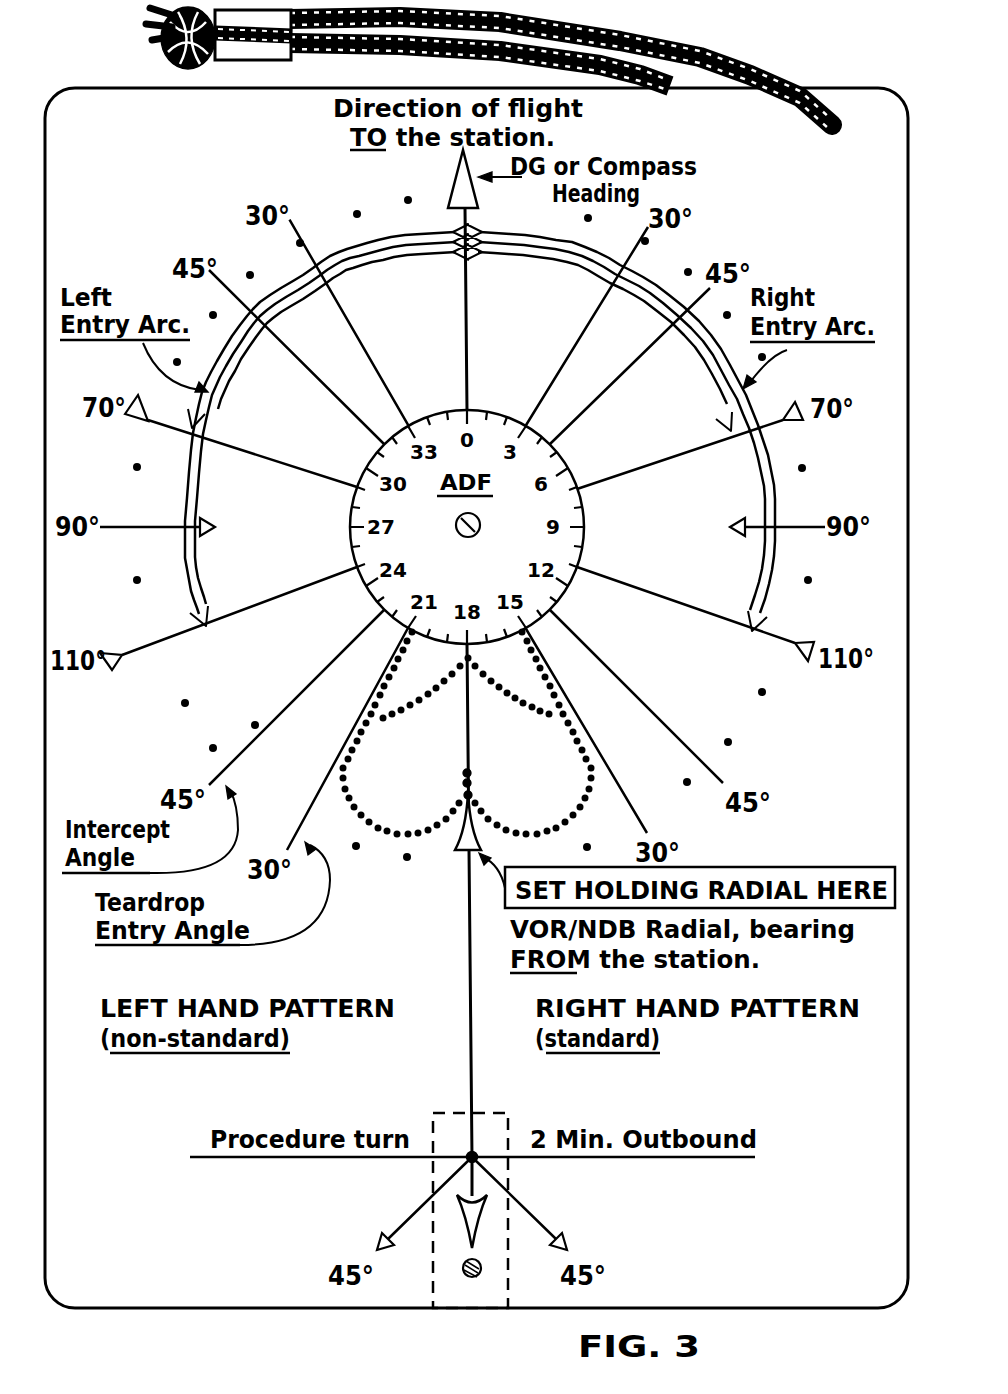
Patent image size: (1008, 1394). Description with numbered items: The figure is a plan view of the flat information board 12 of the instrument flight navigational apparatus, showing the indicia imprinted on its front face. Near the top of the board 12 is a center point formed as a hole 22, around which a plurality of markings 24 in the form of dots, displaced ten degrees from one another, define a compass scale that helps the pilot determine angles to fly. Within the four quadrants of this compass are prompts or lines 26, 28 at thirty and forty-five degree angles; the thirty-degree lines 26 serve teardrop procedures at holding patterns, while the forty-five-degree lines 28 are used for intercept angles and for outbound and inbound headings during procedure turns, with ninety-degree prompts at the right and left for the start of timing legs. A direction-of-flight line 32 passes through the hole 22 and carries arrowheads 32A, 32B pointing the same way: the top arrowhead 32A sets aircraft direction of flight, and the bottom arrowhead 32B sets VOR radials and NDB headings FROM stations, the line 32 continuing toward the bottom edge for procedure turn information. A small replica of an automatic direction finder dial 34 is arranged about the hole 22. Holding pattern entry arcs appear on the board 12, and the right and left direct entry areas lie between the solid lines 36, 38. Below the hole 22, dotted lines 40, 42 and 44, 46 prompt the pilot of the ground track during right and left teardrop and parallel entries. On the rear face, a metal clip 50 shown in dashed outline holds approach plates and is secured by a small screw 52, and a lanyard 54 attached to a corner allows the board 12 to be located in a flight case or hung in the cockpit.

The flat information board 12 is at (858, 84).
The hole 22 is at (468, 537).
The markings 24 is at (408, 200).
The lines 26 is at (355, 338).
The lines 28 is at (298, 373).
The direction-of-flight line 32 is at (470, 355).
The arrowhead 32A is at (458, 188).
The arrowhead 32B is at (476, 820).
The automatic direction finder dial 34 is at (568, 458).
The solid line 36 is at (648, 593).
The solid line 38 is at (647, 467).
The dotted line 40 is at (548, 670).
The dotted line 42 is at (540, 712).
The dotted line 44 is at (375, 690).
The dotted line 46 is at (383, 720).
The metal clip 50 is at (508, 1113).
The screw 52 is at (481, 1266).
The lanyard 54 is at (655, 40).